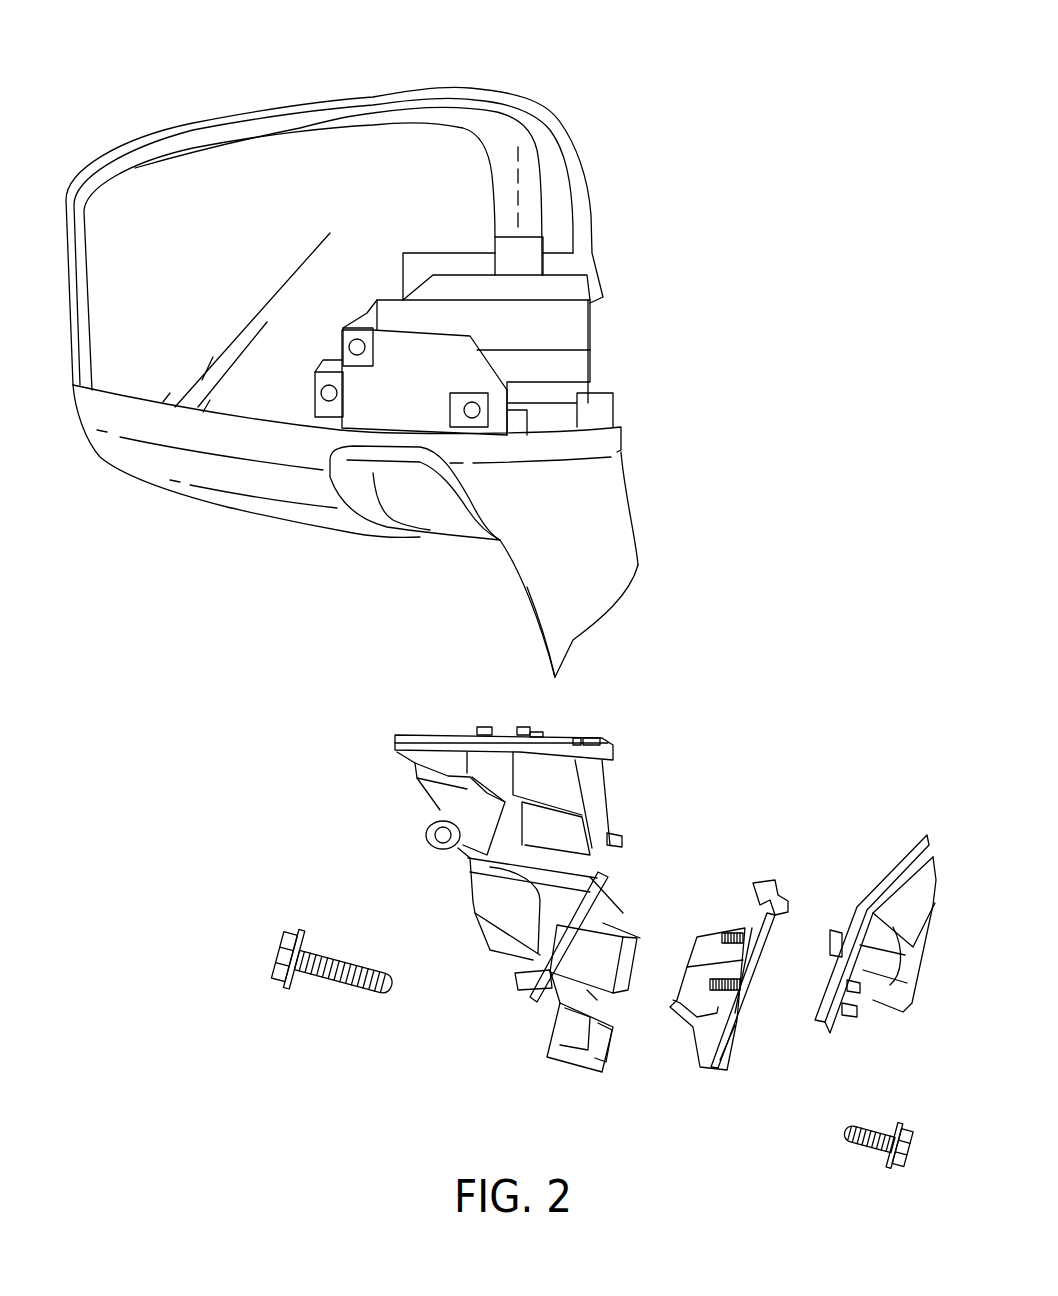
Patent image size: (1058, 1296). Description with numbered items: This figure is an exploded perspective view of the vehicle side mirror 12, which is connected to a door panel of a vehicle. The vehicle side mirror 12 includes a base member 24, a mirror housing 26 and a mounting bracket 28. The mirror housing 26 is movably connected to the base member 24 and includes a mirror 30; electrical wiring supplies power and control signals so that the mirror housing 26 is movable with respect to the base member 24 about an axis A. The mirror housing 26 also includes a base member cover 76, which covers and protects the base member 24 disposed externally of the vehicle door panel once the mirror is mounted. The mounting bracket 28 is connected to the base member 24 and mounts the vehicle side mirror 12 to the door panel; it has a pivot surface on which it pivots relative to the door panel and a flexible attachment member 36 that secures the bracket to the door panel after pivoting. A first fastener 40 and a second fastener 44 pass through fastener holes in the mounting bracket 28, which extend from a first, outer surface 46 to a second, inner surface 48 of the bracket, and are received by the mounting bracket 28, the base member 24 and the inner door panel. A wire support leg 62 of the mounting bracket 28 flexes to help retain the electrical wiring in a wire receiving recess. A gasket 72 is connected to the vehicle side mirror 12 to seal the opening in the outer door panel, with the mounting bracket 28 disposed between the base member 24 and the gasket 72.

The vehicle side mirror 12 is at (165, 885).
The base member 24 is at (608, 783).
The mirror housing 26 is at (472, 90).
The mounting bracket 28 is at (745, 986).
The mirror 30 is at (223, 202).
The flexible attachment member 36 is at (782, 891).
The first fastener 40 is at (857, 1143).
The second fastener 44 is at (353, 960).
The first surface 46 is at (767, 917).
The second surface 48 is at (757, 980).
The wire support leg 62 is at (720, 1050).
The gasket 72 is at (882, 1005).
The base member cover 76 is at (627, 517).
The axis A is at (520, 187).